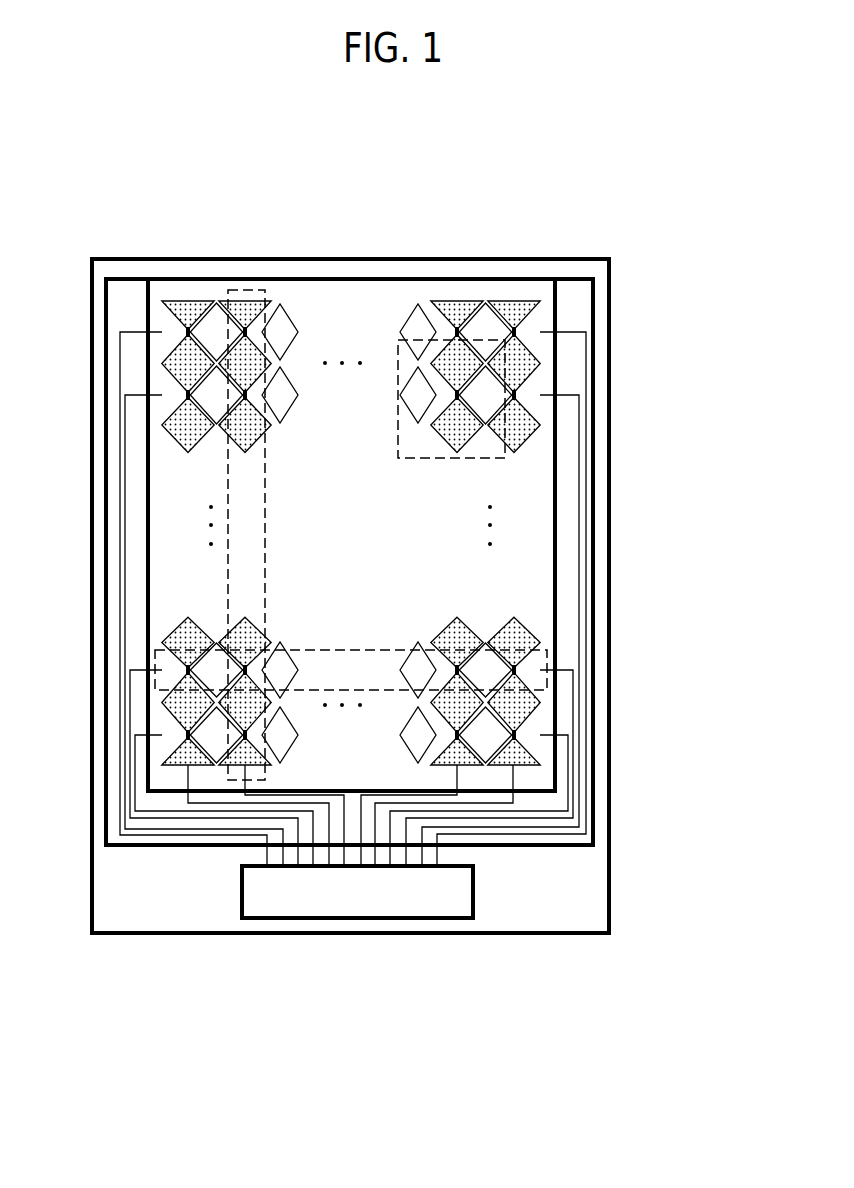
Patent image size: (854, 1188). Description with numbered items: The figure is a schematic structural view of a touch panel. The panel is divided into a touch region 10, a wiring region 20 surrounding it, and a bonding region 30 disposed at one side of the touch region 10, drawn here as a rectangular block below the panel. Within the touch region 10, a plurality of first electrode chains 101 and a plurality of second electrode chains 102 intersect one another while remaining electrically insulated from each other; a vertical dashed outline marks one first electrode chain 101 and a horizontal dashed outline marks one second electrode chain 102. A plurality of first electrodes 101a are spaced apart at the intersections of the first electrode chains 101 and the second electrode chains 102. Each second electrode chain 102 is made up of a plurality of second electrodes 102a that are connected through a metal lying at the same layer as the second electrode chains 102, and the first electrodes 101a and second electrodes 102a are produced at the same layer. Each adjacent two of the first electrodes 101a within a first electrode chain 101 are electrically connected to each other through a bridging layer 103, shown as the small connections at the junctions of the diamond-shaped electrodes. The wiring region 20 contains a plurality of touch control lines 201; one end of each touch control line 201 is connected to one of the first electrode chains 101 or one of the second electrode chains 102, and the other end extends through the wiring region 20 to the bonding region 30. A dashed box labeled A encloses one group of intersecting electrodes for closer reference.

The touch region 10 is at (348, 303).
The wiring region 20 is at (578, 308).
The touch control lines 201 is at (597, 361).
The bonding region 30 is at (370, 895).
The first electrode chains 101 is at (247, 290).
The first electrodes 101a is at (518, 300).
The second electrode chains 102 is at (547, 650).
The second electrodes 102a is at (483, 322).
The bridging layer 103 is at (513, 395).
The enlarged region A is at (450, 458).